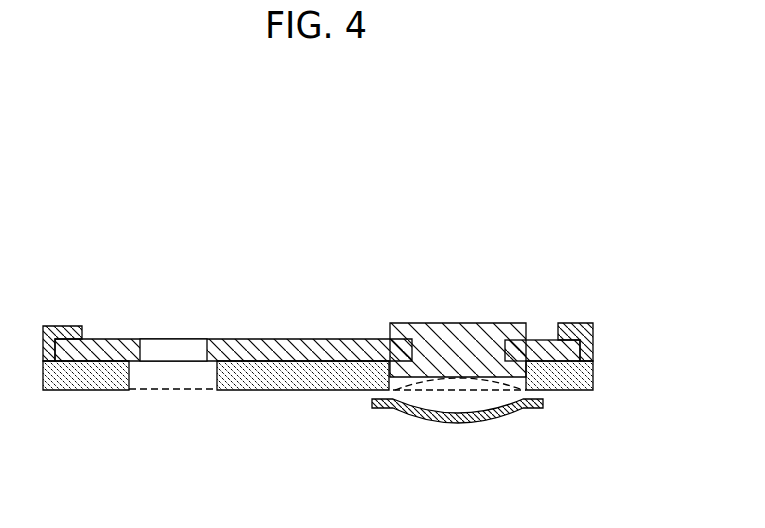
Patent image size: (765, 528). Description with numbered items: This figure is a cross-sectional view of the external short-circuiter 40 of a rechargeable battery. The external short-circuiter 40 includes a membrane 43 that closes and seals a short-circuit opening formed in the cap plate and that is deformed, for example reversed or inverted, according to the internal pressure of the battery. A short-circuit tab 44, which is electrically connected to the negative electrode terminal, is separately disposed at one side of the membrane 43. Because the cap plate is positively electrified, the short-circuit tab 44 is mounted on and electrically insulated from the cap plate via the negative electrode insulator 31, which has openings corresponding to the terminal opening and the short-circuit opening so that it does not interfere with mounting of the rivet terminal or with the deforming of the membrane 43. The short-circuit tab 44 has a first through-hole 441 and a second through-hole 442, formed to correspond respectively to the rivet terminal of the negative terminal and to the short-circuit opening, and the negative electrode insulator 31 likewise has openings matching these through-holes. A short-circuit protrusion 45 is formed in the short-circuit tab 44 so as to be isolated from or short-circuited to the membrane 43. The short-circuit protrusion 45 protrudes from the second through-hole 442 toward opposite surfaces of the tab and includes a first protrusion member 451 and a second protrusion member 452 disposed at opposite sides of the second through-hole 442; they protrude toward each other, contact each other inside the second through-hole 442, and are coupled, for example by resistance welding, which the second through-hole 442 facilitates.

The external short-circuiter 40 is at (335, 203).
The negative electrode insulator 31 is at (582, 372).
The membrane 43 is at (463, 427).
The short-circuit tab 44 is at (233, 326).
The first through-hole 441 is at (172, 341).
The second through-hole 442 is at (427, 333).
The short-circuit protrusion 45 is at (497, 246).
The first protrusion member 451 is at (545, 338).
The second protrusion member 452 is at (556, 374).